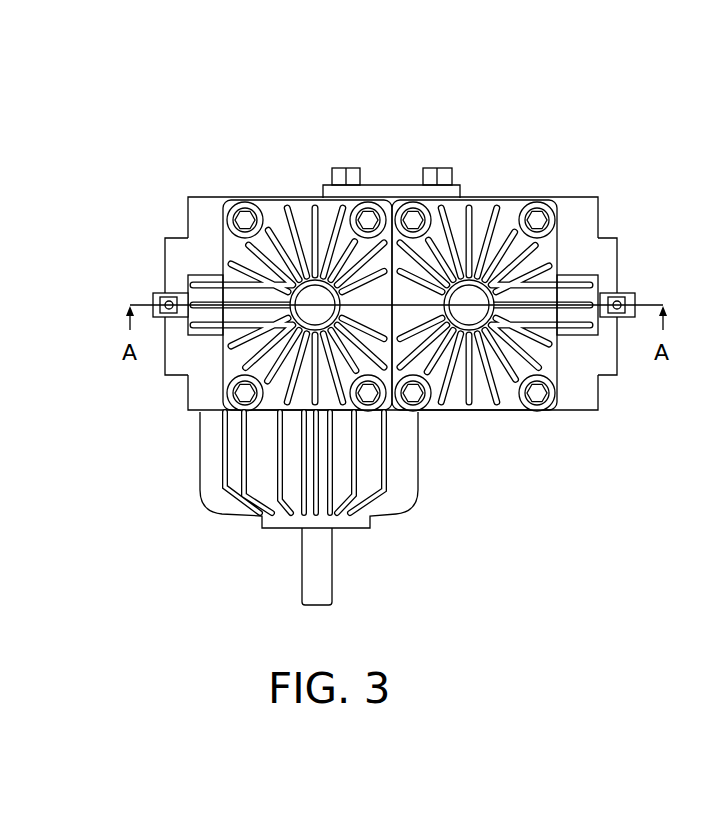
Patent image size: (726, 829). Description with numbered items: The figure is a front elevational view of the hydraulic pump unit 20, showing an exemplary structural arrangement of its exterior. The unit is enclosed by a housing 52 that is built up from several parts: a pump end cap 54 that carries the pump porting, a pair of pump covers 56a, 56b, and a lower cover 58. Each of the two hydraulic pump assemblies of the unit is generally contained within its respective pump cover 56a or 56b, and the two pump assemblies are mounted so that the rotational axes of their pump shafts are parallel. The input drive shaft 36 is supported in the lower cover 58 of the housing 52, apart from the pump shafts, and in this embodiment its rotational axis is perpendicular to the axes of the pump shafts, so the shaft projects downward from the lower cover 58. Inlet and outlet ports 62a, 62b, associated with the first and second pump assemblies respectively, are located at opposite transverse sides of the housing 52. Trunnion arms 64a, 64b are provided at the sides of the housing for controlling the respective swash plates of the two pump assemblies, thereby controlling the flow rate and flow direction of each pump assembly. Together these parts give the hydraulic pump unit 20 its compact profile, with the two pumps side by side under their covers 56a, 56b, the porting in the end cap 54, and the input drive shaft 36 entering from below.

The hydraulic pump unit 20 is at (183, 581).
The input drive shaft 36 is at (318, 575).
The housing 52 is at (270, 485).
The pump end cap 54 is at (598, 412).
The pump cover 56a is at (240, 360).
The pump cover 56b is at (508, 402).
The lower cover 58 is at (202, 455).
The inlet and outlet ports 62a is at (158, 272).
The inlet and outlet ports 62b is at (627, 332).
The trunnion arm 64a is at (156, 318).
The trunnion arm 64b is at (637, 292).